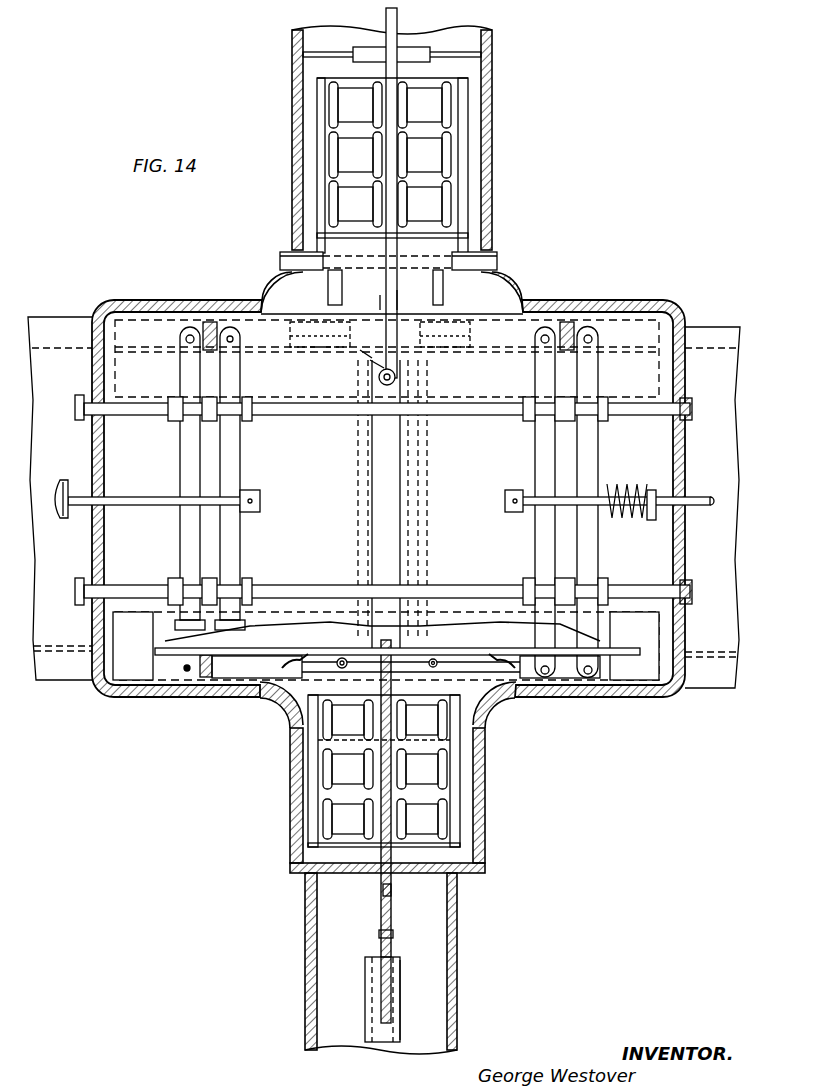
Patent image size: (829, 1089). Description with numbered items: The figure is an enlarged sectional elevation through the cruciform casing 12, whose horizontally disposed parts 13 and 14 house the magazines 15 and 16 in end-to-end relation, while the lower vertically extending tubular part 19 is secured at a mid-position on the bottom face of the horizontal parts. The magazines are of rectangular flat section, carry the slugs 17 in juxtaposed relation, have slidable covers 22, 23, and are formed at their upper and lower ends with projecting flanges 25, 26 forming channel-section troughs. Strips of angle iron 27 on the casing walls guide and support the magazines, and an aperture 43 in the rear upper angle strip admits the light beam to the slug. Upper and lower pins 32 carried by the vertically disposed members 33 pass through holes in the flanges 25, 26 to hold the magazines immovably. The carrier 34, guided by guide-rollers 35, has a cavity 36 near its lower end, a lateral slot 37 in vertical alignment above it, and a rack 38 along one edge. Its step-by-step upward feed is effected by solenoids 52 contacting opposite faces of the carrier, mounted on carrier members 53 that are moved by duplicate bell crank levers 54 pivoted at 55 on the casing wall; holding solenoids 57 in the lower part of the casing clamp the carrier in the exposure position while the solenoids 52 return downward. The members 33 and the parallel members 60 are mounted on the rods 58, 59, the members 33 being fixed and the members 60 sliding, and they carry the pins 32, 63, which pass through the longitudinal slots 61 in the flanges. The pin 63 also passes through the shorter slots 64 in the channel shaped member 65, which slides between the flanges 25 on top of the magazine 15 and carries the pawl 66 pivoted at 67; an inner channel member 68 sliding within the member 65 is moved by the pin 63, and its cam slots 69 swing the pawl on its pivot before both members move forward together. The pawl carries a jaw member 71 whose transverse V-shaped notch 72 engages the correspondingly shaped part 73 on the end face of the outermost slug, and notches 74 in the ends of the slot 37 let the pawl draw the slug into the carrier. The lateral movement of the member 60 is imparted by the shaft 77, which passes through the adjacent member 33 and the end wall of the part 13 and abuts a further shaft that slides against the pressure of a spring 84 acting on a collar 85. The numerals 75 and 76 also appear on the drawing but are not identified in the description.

The casing 12 is at (292, 146).
The horizontally disposed part 13 is at (630, 316).
The horizontally disposed part 14 is at (140, 306).
The magazine 15 is at (718, 486).
The magazine 16 is at (182, 482).
The slugs 17 is at (392, 468).
The lower vertically extending tubular part 19 is at (458, 948).
The slidable cover 22 is at (366, 990).
The slidable cover 23 is at (400, 996).
The upper projecting flange 25 is at (56, 326).
The lower projecting flange 26 is at (135, 698).
The strip of angle iron 27 is at (130, 315).
The pin 32 is at (186, 338).
The vertically disposed member 33 is at (182, 462).
The carrier 34 is at (386, 22).
The guide-roller 35 is at (410, 50).
The cavity 36 is at (378, 938).
The lateral cut out portion or slot 37 is at (345, 657).
The rack 38 is at (392, 889).
The aperture 43 is at (380, 384).
The solenoids 52 is at (440, 155).
The carrier member 53 is at (462, 170).
The bell crank lever 54 is at (285, 256).
The pivot 55 is at (497, 262).
The holding solenoids 57 is at (340, 808).
The rod 58 is at (142, 412).
The rod 59 is at (255, 588).
The parallel member 60 is at (242, 468).
The longitudinal slot 61 is at (246, 344).
The pin 63 is at (232, 334).
The slot 64 is at (246, 340).
The channel shaped member 65 is at (190, 330).
The pawl 66 is at (452, 322).
The pivot 67 is at (470, 346).
The inner member 68 is at (208, 322).
The cam slot 69 is at (316, 320).
The jaw member 71 is at (378, 300).
The V-shaped notch 72 is at (365, 352).
The correspondingly shaped part 73 is at (378, 366).
The notch 74 is at (397, 300).
The adjusting rod 75 is at (125, 506).
The knob 76 is at (62, 520).
The shaft 77 is at (698, 508).
The spring 84 is at (630, 484).
The collar 85 is at (650, 520).